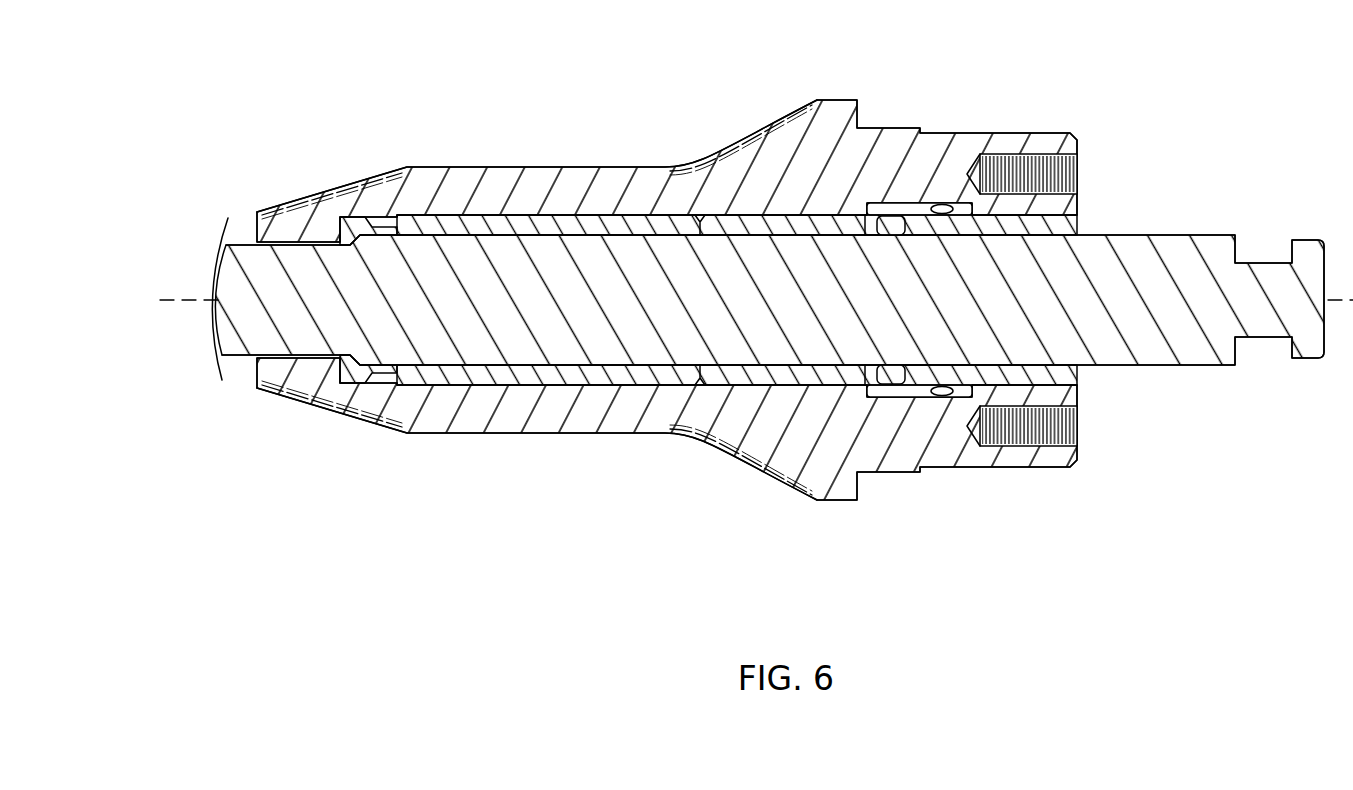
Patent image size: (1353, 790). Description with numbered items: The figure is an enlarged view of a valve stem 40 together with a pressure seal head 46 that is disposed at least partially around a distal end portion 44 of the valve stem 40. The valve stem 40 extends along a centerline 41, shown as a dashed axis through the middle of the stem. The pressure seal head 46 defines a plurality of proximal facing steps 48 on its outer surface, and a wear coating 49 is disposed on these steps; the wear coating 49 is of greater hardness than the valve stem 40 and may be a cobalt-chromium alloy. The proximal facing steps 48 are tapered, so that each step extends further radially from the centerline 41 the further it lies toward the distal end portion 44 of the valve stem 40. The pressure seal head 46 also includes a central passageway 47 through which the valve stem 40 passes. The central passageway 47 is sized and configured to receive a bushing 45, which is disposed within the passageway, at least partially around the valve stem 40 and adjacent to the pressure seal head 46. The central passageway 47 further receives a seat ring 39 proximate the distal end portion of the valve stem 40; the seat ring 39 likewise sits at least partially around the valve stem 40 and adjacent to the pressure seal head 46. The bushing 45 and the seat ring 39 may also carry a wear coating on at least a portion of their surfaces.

The seat ring 39 is at (349, 374).
The valve stem 40 is at (1180, 245).
The centerline 41 is at (200, 300).
The distal end portion 44 is at (436, 97).
The bushing 45 is at (503, 378).
The pressure seal head 46 is at (378, 498).
The central passageway 47 is at (468, 228).
The proximal facing steps 48 is at (372, 180).
The wear coating 49 is at (303, 197).